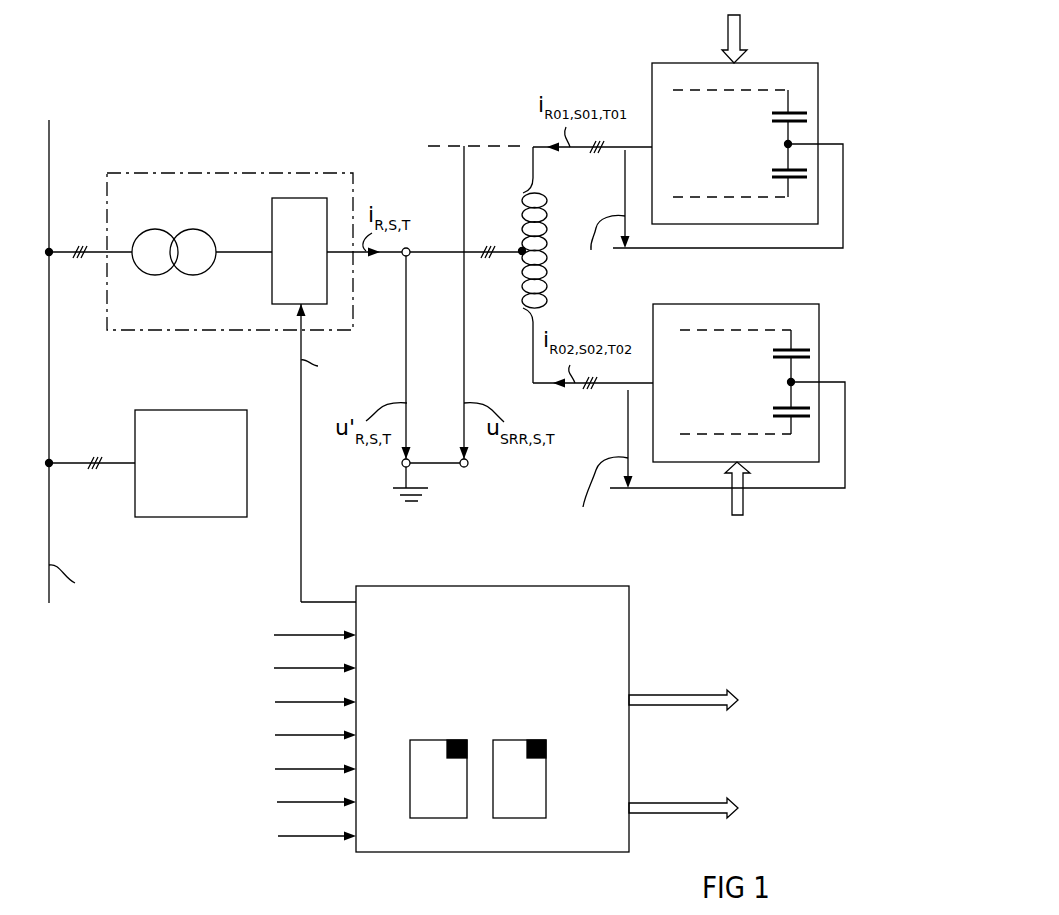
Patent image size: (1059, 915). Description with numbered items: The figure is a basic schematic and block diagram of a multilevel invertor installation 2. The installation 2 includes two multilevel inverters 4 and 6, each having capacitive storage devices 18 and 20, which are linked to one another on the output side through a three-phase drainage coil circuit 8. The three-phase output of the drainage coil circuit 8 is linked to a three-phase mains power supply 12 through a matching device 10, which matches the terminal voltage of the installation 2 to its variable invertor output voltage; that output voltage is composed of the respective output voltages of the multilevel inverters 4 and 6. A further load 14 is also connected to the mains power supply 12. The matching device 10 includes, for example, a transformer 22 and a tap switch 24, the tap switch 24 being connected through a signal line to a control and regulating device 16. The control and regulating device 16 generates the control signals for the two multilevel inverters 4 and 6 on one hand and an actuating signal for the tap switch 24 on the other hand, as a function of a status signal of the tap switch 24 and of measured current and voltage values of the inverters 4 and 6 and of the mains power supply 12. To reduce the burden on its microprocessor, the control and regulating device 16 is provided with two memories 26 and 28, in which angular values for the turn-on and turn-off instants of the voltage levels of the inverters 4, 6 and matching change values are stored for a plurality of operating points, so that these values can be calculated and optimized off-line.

The multilevel invertor installation 2 is at (757, 288).
The multilevel inverter 4 is at (818, 90).
The multilevel inverter 6 is at (819, 340).
The three-phase drainage coil circuit 8 is at (548, 226).
The matching device 10 is at (220, 173).
The three-phase mains power supply 12 is at (49, 146).
The further load 14 is at (175, 410).
The control and regulating device 16 is at (660, 638).
The capacitive storage device 18 is at (775, 112).
The capacitive storage device 20 is at (775, 170).
The transformer 22 is at (152, 275).
The tap switch 24 is at (272, 234).
The memory 26 is at (418, 740).
The memory 28 is at (502, 740).